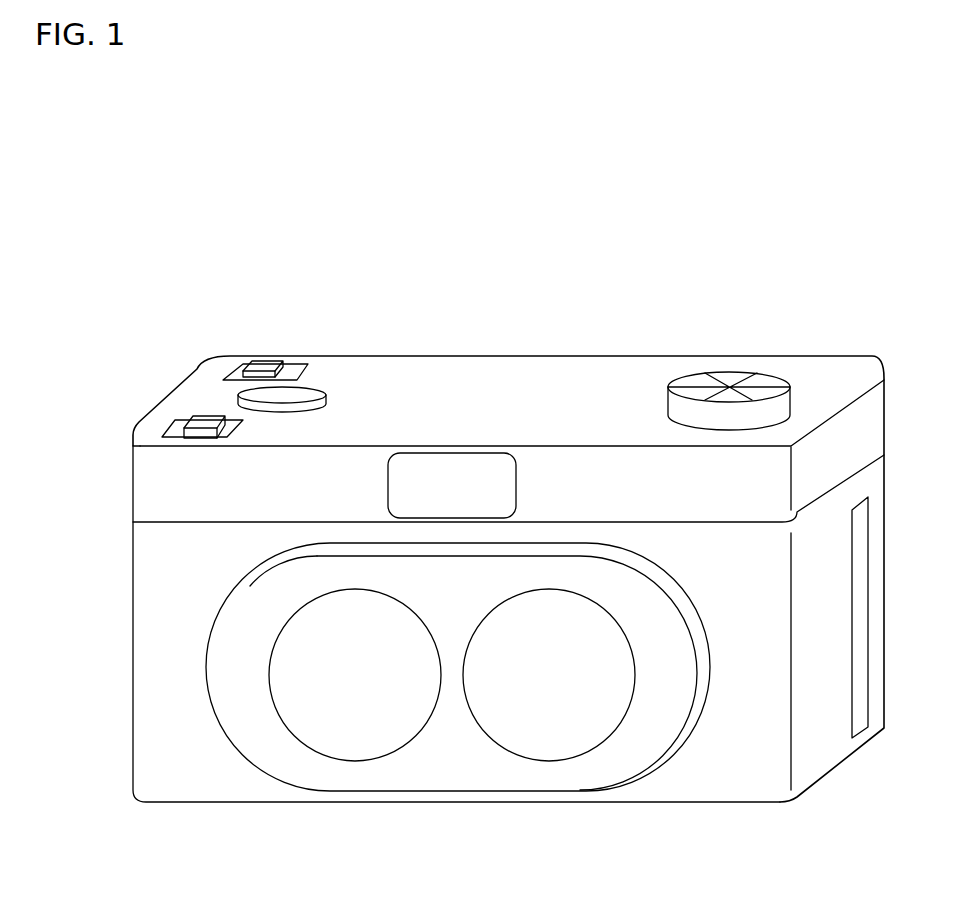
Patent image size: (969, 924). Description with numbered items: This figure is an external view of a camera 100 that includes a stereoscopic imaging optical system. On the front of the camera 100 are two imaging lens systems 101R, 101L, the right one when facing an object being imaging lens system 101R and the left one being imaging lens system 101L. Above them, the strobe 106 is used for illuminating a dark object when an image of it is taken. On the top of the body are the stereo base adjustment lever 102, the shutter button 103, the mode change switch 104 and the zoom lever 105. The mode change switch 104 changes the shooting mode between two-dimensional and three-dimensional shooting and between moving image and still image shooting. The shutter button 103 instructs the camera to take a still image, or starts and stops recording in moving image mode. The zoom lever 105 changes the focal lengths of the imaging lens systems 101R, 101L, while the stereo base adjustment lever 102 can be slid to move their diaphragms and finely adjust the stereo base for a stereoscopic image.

The camera 100 is at (478, 564).
The imaging lens system 101R is at (354, 713).
The imaging lens system 101L is at (535, 722).
The stereo base adjustment lever 102 is at (263, 362).
The shutter button 103 is at (288, 393).
The mode change switch 104 is at (729, 387).
The zoom lever 105 is at (193, 420).
The strobe 106 is at (463, 468).